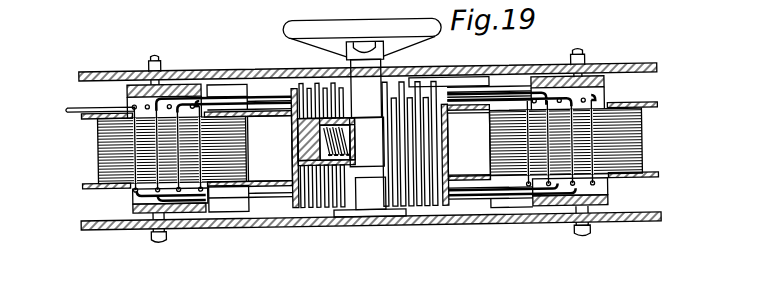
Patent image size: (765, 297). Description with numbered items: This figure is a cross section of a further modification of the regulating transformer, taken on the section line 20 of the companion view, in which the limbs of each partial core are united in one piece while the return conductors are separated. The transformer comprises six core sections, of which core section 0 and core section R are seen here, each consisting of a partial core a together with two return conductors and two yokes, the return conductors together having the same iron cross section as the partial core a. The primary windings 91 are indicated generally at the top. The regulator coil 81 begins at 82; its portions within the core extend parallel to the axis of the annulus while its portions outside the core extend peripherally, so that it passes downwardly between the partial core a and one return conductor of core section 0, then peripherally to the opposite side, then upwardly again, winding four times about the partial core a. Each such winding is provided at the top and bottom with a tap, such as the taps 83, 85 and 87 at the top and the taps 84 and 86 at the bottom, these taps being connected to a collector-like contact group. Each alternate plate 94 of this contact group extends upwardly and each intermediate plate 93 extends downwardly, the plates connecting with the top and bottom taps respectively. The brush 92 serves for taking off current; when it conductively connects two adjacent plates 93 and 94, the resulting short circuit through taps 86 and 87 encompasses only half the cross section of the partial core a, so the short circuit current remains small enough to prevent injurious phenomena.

The section line 20 is at (112, 100).
The beginning of regulator coil 82 is at (76, 112).
The core section O 0 is at (100, 160).
The partial core a is at (119, 168).
The regulator coil 81 is at (132, 189).
The tap 84 is at (143, 205).
The tap 86 is at (173, 202).
The primary windings 91 is at (136, 87).
The tap 85 is at (160, 99).
The tap 87 is at (192, 101).
The tap 83 is at (123, 101).
The alternate contact plate 94 is at (293, 92).
The brush 92 is at (302, 155).
The intermediate contact plate 93 is at (302, 192).
The core section R is at (642, 144).